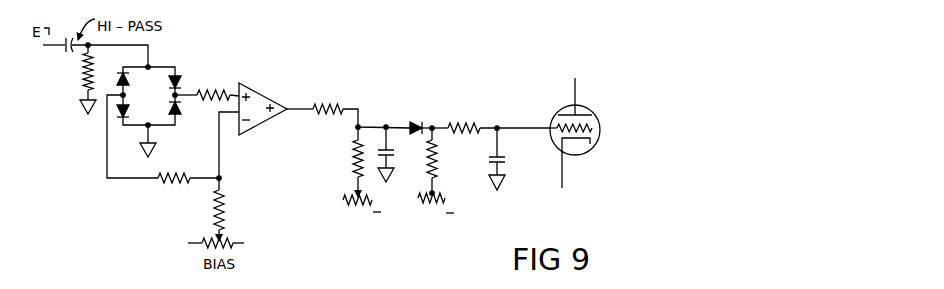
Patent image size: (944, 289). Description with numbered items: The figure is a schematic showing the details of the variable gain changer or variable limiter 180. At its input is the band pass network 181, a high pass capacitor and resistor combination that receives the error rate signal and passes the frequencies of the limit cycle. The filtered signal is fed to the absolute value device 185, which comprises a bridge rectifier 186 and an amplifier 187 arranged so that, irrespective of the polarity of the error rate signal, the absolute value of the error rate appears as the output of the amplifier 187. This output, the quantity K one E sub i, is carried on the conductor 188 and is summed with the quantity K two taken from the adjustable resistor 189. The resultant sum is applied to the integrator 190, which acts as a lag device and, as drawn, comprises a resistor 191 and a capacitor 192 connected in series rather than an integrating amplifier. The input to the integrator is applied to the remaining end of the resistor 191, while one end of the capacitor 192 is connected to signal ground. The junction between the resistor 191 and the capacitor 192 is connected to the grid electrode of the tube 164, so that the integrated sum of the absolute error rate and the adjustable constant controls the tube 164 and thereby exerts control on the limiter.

The tube 164 is at (598, 140).
The variable gain changer 180 is at (353, 63).
The band pass network 181 is at (74, 60).
The absolute value device 185 is at (184, 87).
The bridge rectifier 186 is at (160, 108).
The amplifier 187 is at (248, 88).
The conductor 188 is at (283, 112).
The adjustable resistor 189 is at (348, 193).
The integrator 190 is at (507, 153).
The resistor 191 is at (475, 125).
The capacitor 192 is at (493, 171).